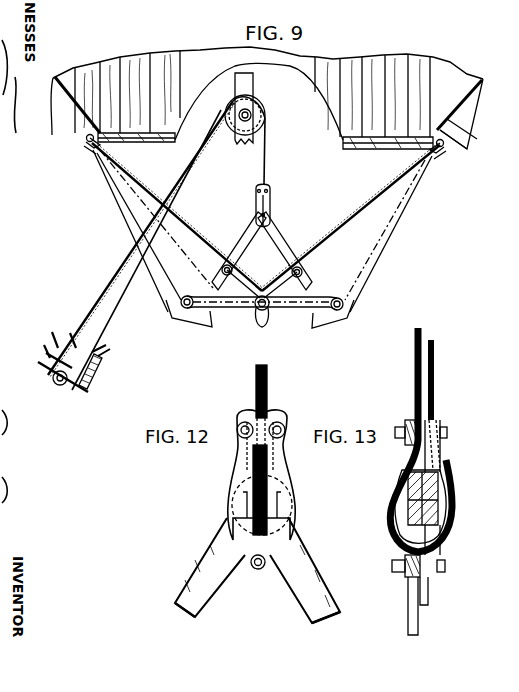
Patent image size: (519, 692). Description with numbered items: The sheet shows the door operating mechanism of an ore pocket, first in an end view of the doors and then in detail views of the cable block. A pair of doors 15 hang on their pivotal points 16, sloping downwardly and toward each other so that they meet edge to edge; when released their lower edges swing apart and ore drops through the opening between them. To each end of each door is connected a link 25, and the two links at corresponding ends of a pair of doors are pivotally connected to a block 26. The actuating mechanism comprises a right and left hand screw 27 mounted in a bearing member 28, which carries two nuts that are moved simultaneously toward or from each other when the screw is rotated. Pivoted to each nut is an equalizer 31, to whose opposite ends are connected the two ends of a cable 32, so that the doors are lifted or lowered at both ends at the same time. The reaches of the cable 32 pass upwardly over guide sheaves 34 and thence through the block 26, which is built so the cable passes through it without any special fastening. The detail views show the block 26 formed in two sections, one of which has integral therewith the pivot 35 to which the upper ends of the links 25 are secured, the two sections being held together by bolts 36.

In FIG. 9, the door 15 is at (178, 206).
In FIG. 9, the pivotal point 16 is at (86, 140).
In FIG. 9, the link 25 is at (282, 240).
In FIG. 12, the link 25 is at (260, 593).
In FIG. 13, the link 25 is at (420, 613).
In FIG. 9, the block 26 is at (268, 198).
In FIG. 12, the block 26 is at (281, 422).
In FIG. 9, the right and left hand screw 27 is at (60, 386).
In FIG. 9, the bearing member 28 is at (96, 370).
In FIG. 9, the equalizer 31 is at (50, 378).
In FIG. 9, the cable 32 is at (103, 315).
In FIG. 12, the cable 32 is at (256, 385).
In FIG. 13, the cable 32 is at (434, 348).
In FIG. 9, the guide sheave 34 is at (258, 112).
In FIG. 13, the pivot 35 is at (395, 505).
In FIG. 13, the bolt 36 is at (447, 432).